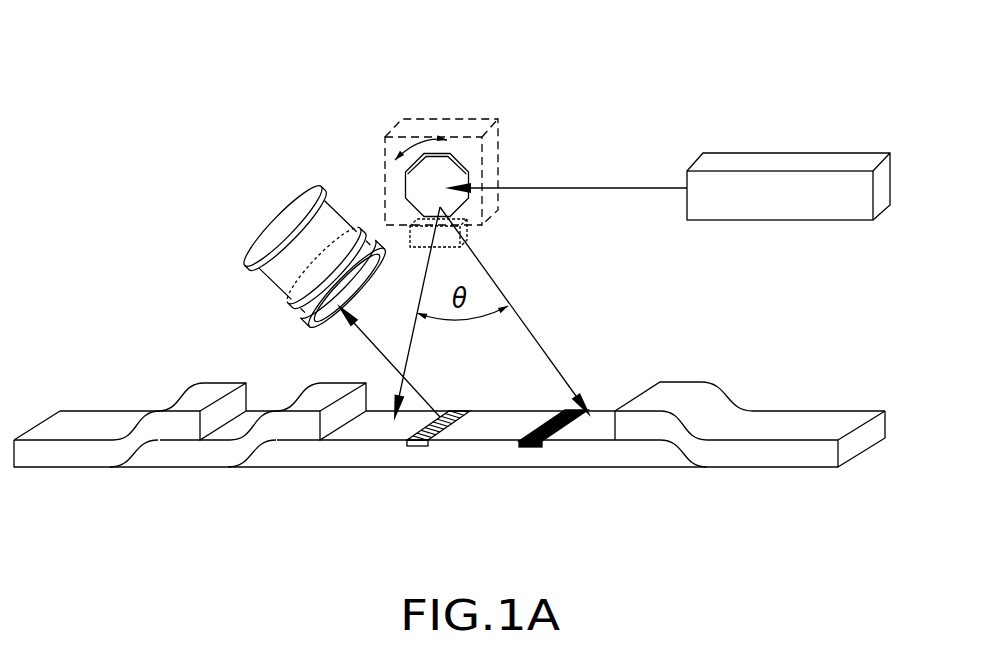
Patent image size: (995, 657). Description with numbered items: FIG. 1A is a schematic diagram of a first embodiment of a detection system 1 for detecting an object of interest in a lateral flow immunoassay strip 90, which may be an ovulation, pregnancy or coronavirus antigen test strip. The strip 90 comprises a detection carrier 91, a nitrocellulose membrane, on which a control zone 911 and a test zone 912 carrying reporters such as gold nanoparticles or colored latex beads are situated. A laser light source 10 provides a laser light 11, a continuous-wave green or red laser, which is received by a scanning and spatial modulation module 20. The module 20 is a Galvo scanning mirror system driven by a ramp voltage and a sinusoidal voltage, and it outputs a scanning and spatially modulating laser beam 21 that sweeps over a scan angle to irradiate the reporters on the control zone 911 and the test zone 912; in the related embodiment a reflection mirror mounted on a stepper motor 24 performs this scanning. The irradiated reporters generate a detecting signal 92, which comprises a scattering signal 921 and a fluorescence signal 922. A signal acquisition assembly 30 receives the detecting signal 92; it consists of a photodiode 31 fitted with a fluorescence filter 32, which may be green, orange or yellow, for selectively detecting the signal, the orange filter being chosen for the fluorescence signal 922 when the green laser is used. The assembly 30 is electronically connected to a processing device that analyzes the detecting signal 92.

The detection system 1 is at (112, 95).
The laser light source 10 is at (792, 163).
The laser light 11 is at (625, 187).
The scanning and spatial modulation module 20 is at (498, 120).
The scanning and spatially modulating laser beam 21 is at (530, 333).
The stepper motor 24 is at (465, 238).
The signal acquisition assembly 30 is at (307, 283).
The photodiode 31 is at (357, 283).
The fluorescence filter 32 is at (287, 300).
The lateral flow immunoassay strip 90 is at (449, 424).
The detection carrier 91 is at (355, 434).
The control zone 911 is at (404, 431).
The test zone 912 is at (530, 432).
The detecting signal 92 is at (239, 388).
The scattering signal 921 is at (179, 411).
The fluorescence signal 922 is at (350, 378).